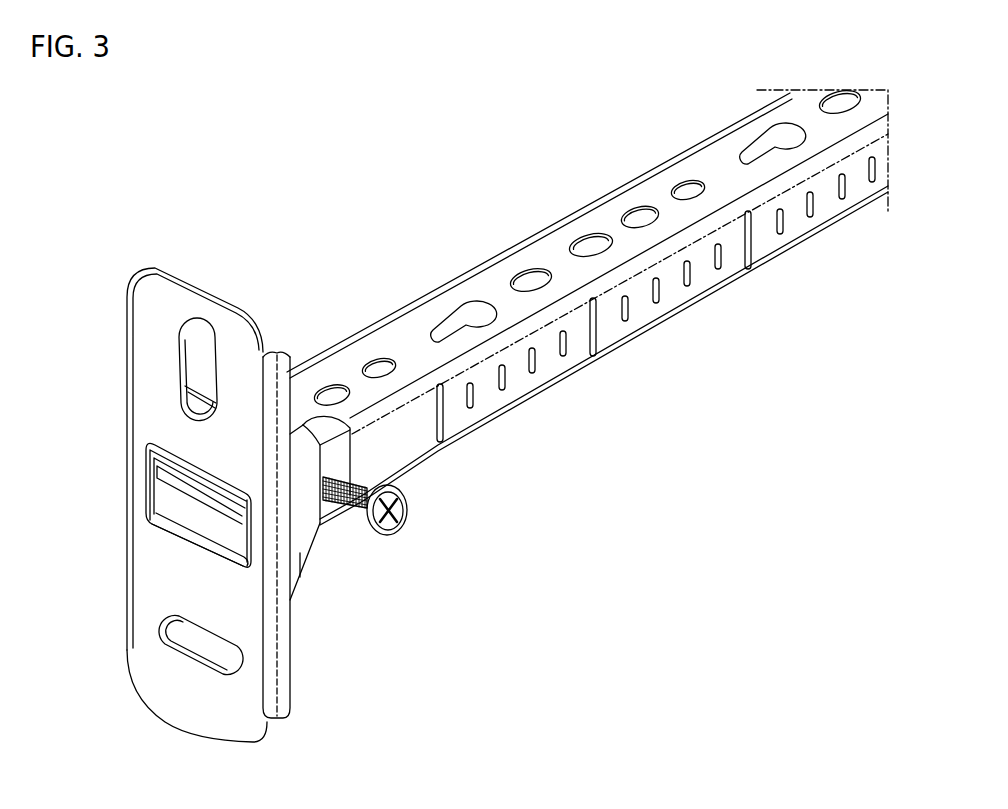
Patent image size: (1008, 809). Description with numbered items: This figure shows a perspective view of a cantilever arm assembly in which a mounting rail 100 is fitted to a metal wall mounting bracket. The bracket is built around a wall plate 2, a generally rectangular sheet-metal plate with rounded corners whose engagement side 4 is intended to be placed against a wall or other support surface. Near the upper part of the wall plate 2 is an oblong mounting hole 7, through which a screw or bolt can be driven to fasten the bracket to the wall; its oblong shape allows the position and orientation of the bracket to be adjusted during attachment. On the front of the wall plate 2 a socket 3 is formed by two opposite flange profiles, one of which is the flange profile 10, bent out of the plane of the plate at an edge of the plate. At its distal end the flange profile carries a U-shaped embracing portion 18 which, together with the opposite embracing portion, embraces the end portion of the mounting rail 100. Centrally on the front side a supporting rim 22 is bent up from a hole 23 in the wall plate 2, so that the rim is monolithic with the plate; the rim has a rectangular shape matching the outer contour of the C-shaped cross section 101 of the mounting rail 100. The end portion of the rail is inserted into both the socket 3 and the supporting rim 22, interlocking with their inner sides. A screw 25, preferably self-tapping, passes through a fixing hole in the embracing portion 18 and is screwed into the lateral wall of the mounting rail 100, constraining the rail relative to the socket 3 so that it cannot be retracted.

The mounting rail 100 is at (582, 207).
The wall plate 2 is at (250, 317).
The engagement side 4 is at (154, 425).
The oblong mounting hole 7 is at (207, 358).
The C-shaped cross section 101 is at (155, 474).
The hole 23 is at (186, 519).
The supporting rim 22 is at (185, 545).
The flange profile 10 is at (302, 565).
The socket 3 is at (343, 540).
The embracing portion 18 is at (340, 470).
The screw 25 is at (363, 530).